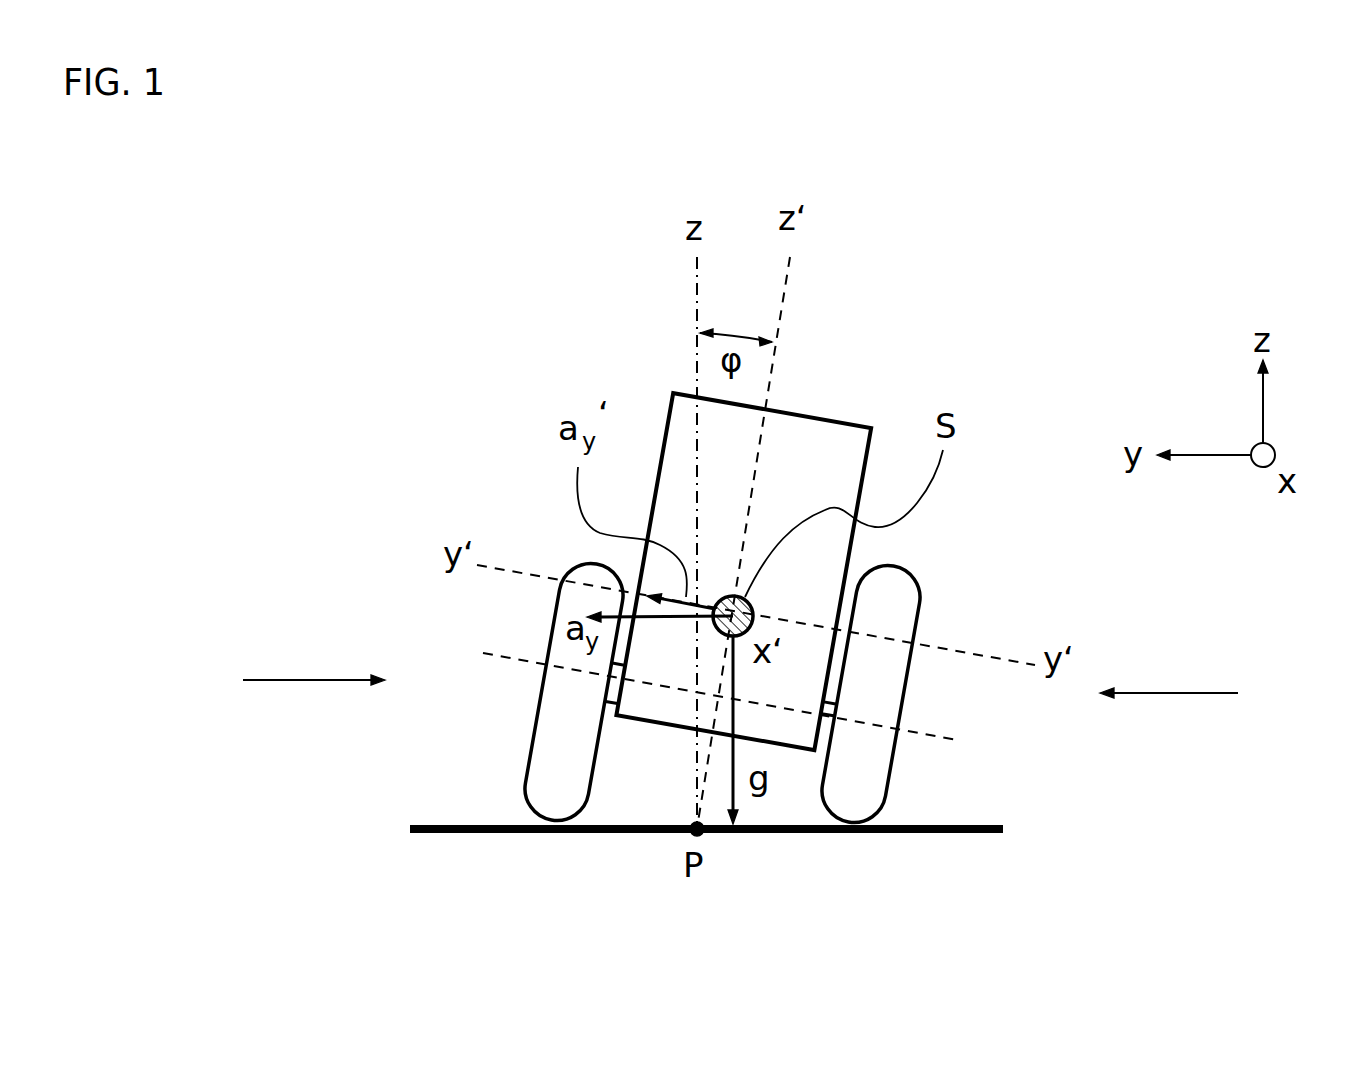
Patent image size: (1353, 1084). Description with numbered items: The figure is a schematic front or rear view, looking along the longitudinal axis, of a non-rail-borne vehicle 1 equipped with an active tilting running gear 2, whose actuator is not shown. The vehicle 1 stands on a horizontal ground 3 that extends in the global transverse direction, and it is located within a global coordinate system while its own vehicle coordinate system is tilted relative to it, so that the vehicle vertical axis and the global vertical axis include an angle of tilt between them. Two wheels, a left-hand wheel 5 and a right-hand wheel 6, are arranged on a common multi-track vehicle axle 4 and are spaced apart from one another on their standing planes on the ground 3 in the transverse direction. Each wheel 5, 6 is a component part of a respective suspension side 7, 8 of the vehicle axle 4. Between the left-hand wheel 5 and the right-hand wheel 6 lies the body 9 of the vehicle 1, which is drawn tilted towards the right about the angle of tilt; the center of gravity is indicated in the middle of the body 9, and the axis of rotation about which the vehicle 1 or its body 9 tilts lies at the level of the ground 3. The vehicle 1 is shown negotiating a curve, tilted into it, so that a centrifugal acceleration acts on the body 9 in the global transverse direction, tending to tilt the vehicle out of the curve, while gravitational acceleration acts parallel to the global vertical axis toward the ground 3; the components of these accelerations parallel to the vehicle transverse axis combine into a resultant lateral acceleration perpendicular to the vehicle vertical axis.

The vehicle 1 is at (460, 432).
The tilting running gear 2 is at (464, 605).
The ground 3 is at (967, 885).
The vehicle axle 4 is at (721, 696).
The left-hand wheel 5 is at (538, 712).
The right-hand wheel 6 is at (918, 603).
The suspension side 7 is at (296, 681).
The suspension side 8 is at (1187, 695).
The body 9 is at (820, 418).